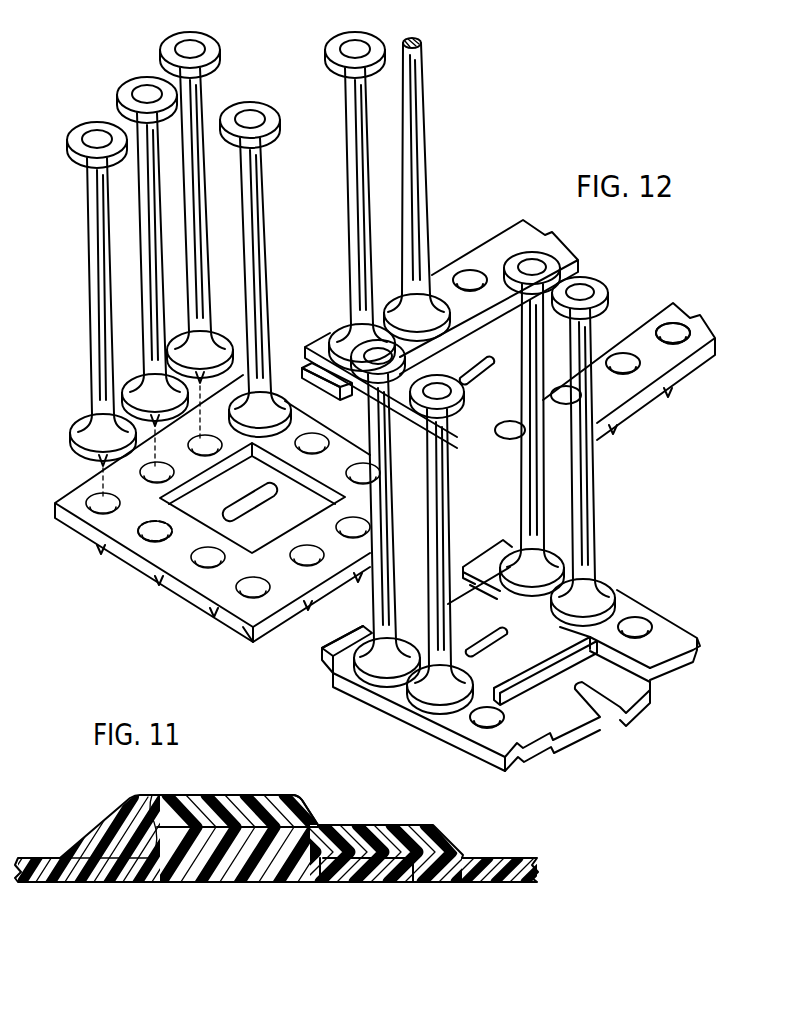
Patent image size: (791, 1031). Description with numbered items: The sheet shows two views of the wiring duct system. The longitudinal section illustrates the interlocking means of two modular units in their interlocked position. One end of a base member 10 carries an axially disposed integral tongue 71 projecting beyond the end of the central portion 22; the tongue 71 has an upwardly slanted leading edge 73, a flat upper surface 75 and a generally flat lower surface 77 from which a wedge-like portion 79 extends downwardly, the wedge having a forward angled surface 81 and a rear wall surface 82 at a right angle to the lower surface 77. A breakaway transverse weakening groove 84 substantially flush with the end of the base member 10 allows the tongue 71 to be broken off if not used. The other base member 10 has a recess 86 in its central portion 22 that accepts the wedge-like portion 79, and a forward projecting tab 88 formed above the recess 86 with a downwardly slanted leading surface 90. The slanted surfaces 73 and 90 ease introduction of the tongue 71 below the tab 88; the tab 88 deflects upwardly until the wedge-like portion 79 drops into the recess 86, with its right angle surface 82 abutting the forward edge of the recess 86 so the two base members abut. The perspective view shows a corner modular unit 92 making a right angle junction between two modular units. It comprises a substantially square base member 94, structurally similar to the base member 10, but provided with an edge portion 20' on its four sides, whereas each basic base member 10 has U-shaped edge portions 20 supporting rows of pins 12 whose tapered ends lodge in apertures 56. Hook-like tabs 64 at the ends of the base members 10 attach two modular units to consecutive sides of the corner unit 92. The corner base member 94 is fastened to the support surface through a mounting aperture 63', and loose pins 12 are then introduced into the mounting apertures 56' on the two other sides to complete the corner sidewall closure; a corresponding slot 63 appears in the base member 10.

In FIG. 12, the base member 10 is at (490, 230).
In FIG. 11, the base member 10 is at (48, 856).
In FIG. 12, the pin 12 is at (86, 284).
In FIG. 12, the edge portion 20 is at (584, 330).
In FIG. 12, the edge portion 20' is at (217, 522).
In FIG. 11, the central portion 22 is at (120, 884).
In FIG. 12, the aperture 56 is at (687, 368).
In FIG. 12, the mounting aperture 56' is at (128, 560).
In FIG. 12, the slot 63 is at (504, 638).
In FIG. 12, the mounting aperture 63' is at (235, 502).
In FIG. 12, the hook-like tab 64 is at (300, 369).
In FIG. 11, the tongue 71 is at (375, 820).
In FIG. 11, the leading edge 73 is at (150, 795).
In FIG. 11, the upper surface 75 is at (312, 825).
In FIG. 11, the lower surface 77 is at (232, 882).
In FIG. 11, the wedge-like portion 79 is at (322, 886).
In FIG. 11, the forward angled surface 81 is at (308, 884).
In FIG. 11, the rear wall surface 82 is at (325, 868).
In FIG. 11, the breakaway transverse weakening groove 84 is at (410, 868).
In FIG. 11, the recess 86 is at (272, 873).
In FIG. 11, the forward projecting tab 88 is at (243, 795).
In FIG. 11, the leading surface 90 is at (300, 797).
In FIG. 12, the corner modular unit 92 is at (243, 629).
In FIG. 12, the square base member 94 is at (183, 563).